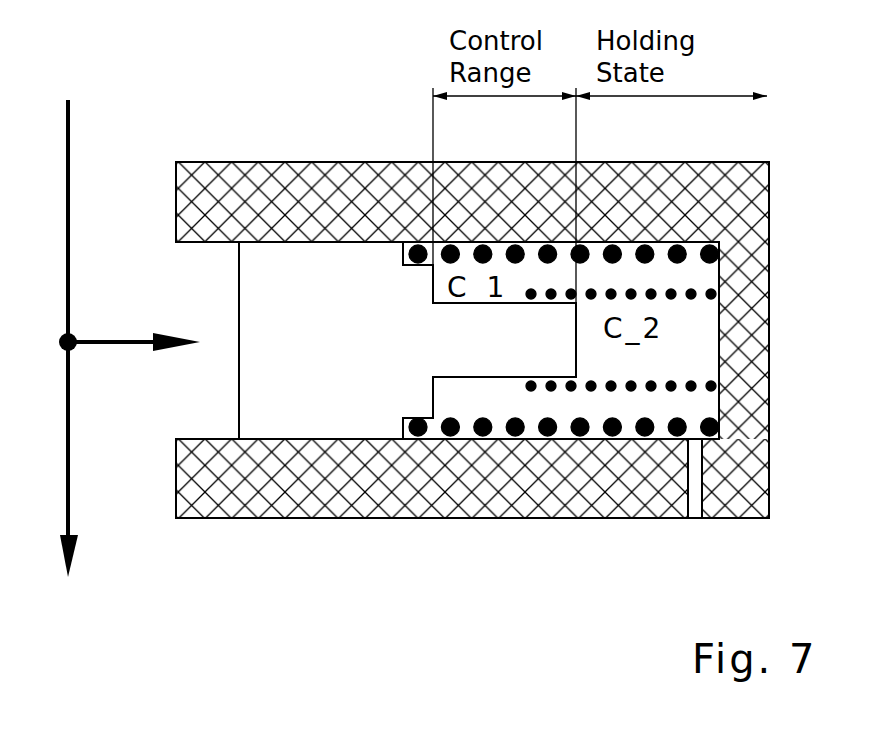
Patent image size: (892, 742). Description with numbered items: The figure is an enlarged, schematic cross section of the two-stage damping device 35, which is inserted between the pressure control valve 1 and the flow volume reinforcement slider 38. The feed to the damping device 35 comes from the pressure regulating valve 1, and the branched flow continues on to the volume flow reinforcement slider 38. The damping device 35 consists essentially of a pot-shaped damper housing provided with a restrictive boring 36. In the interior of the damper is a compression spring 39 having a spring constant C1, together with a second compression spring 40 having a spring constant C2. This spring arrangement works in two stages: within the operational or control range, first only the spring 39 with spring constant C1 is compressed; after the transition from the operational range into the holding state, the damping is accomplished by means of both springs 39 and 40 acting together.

The pressure control valve 1 is at (69, 204).
The two-stage damping device 35 is at (297, 146).
The restrictive boring 36 is at (697, 492).
The flow volume reinforcement slider 38 is at (130, 480).
The compression spring 39 is at (405, 432).
The second compression spring 40 is at (530, 389).